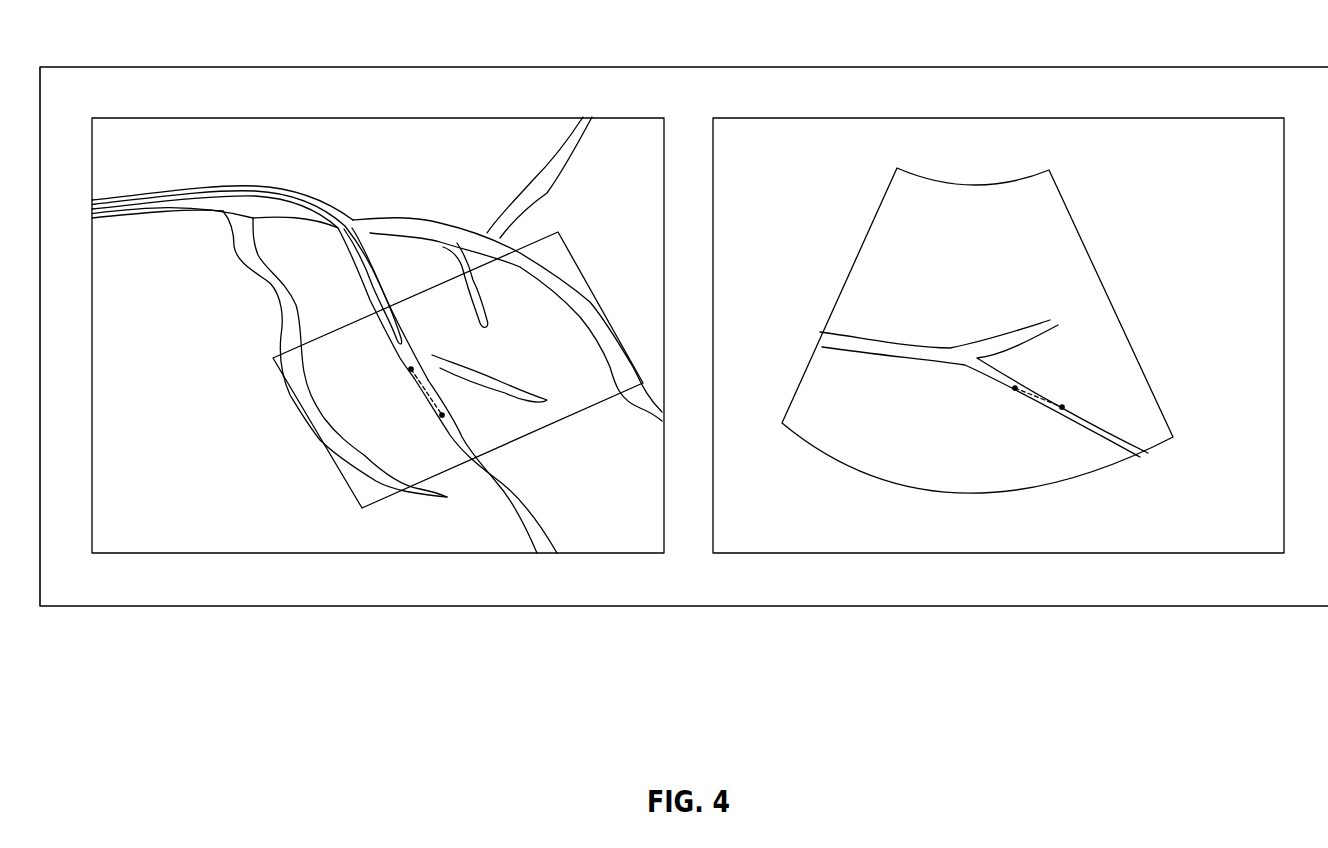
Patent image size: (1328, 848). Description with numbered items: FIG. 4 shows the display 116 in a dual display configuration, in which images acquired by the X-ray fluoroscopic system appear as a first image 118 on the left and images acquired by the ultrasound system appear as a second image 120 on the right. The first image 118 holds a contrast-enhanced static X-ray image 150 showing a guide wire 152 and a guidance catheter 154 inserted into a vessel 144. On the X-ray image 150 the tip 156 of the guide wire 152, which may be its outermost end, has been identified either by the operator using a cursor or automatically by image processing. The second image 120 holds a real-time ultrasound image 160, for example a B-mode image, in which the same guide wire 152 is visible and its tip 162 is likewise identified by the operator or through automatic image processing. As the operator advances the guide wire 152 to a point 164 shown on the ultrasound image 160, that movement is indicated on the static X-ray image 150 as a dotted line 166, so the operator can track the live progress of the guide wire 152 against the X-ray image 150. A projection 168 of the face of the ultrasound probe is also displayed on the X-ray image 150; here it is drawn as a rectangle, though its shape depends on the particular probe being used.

The display 116 is at (106, 67).
The first image 118 is at (161, 118).
The second image 120 is at (782, 118).
The X-ray image 150 is at (233, 152).
The vessel 144 is at (245, 187).
The guidance catheter 154 is at (360, 216).
The guide wire 152 is at (424, 354).
The tip 156 is at (410, 370).
The dotted line 166 is at (441, 416).
The projection 168 is at (577, 410).
The ultrasound image 160 is at (946, 152).
The tip 162 is at (1014, 390).
The point 164 is at (1063, 406).